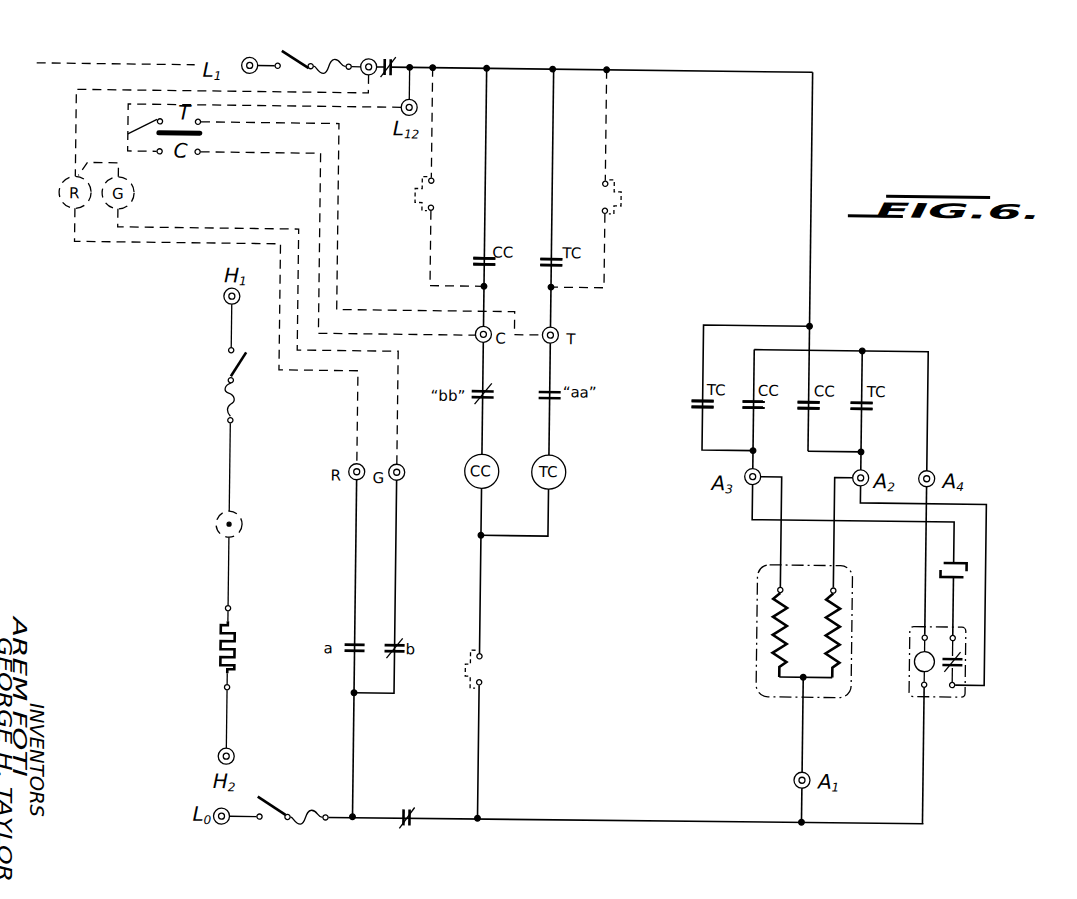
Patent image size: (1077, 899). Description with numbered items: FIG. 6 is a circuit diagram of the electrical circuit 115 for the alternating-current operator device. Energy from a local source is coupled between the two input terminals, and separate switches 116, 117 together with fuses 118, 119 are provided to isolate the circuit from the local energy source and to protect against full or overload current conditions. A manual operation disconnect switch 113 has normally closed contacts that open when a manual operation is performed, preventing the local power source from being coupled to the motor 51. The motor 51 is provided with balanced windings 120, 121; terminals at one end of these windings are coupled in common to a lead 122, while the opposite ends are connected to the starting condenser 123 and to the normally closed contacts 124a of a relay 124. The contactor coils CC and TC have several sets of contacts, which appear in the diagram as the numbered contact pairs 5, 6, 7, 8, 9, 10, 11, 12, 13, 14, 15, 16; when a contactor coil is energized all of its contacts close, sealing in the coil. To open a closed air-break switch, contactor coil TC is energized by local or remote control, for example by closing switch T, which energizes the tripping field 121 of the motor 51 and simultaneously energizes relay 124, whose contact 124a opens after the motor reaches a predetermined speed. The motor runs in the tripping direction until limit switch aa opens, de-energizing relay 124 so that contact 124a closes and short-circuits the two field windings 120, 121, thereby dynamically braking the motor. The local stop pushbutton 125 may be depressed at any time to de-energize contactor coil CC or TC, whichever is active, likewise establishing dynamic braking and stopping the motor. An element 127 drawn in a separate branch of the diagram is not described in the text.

The coil contact 5 is at (477, 272).
The coil contact 6 is at (476, 259).
The coil contact 7 is at (806, 416).
The coil contact 8 is at (806, 395).
The coil contact 9 is at (750, 415).
The coil contact 10 is at (746, 394).
The coil contact 11 is at (546, 254).
The coil contact 12 is at (546, 275).
The coil contact 13 is at (693, 394).
The coil contact 14 is at (692, 415).
The coil contact 15 is at (857, 396).
The coil contact 16 is at (857, 417).
The motor 51 is at (740, 693).
The manual operation disconnect switch 113 is at (409, 807).
The electrical circuit 115 is at (637, 752).
The switch 116 is at (292, 60).
The switch 117 is at (226, 369).
The fuse 118 is at (331, 64).
The fuse 119 is at (226, 408).
The balanced winding 120 is at (777, 625).
The balanced winding (tripping field) 121 is at (839, 631).
The lead 122 is at (809, 735).
The starting condenser 123 is at (966, 557).
The relay 124 is at (916, 660).
The normally closed contacts of relay 124a is at (968, 656).
The local stop pushbutton 125 is at (472, 672).
The heater 127 is at (218, 647).